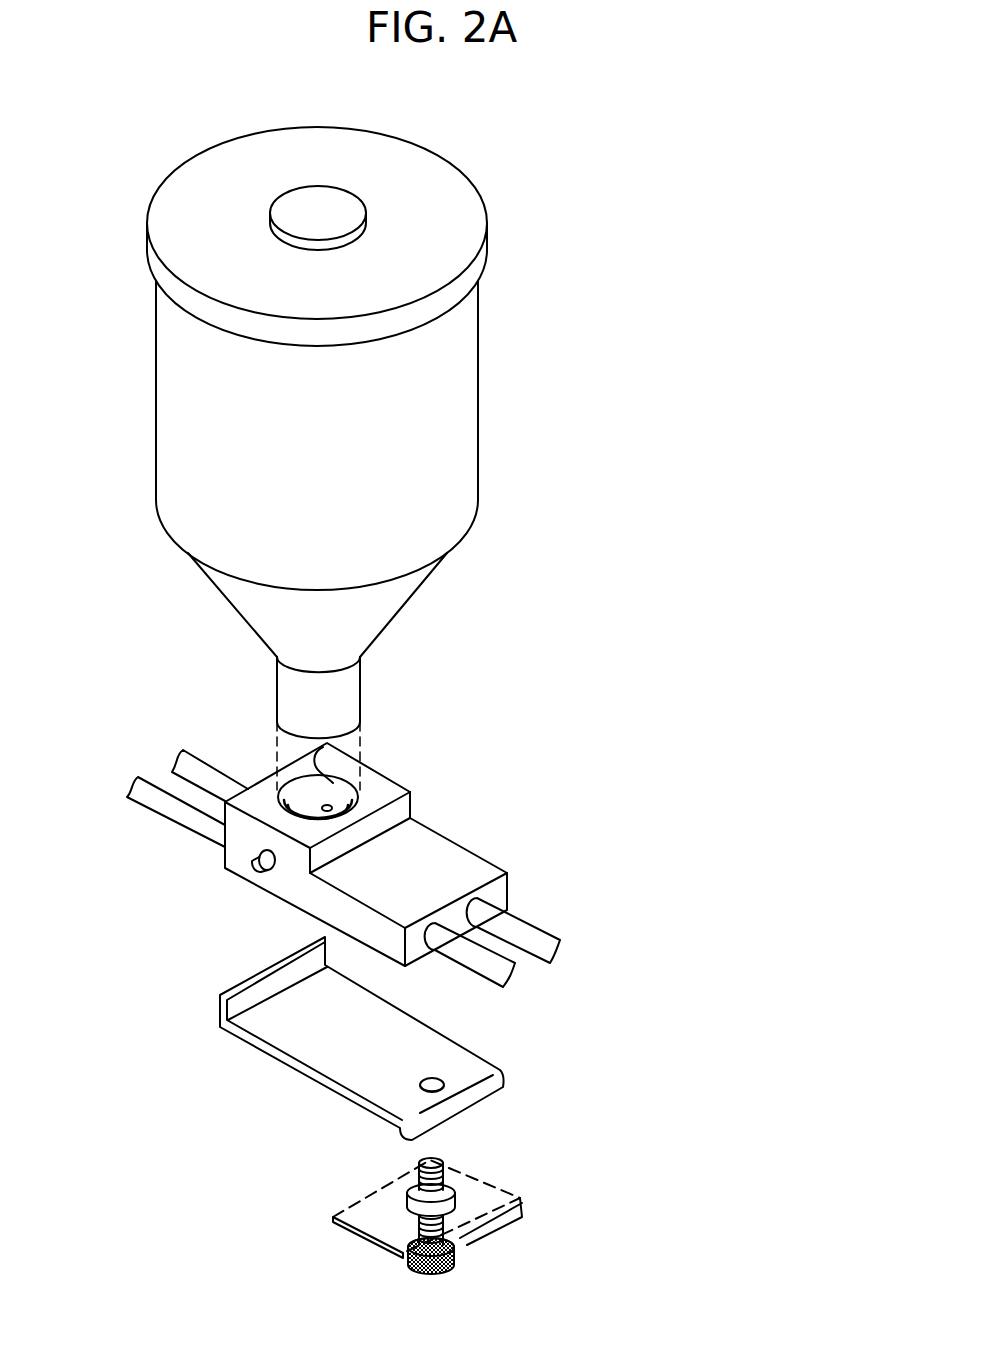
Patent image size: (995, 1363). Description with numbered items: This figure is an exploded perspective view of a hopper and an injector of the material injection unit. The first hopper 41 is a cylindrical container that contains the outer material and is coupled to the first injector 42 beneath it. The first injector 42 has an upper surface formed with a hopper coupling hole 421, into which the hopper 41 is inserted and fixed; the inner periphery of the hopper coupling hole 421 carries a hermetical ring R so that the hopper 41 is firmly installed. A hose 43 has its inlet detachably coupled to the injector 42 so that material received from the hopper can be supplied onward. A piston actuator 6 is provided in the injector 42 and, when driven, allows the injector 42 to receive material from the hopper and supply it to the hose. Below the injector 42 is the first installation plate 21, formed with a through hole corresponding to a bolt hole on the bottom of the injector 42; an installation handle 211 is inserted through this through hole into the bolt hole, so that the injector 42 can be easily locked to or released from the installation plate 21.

The first hopper 41 is at (522, 193).
The first injector 42 is at (428, 793).
The hopper coupling hole 421 is at (290, 778).
The hermetical ring R is at (312, 788).
The hose 43 is at (202, 775).
The piston actuator 6 is at (553, 938).
The first installation plate 21 is at (337, 1074).
The installation handle 211 is at (517, 1177).